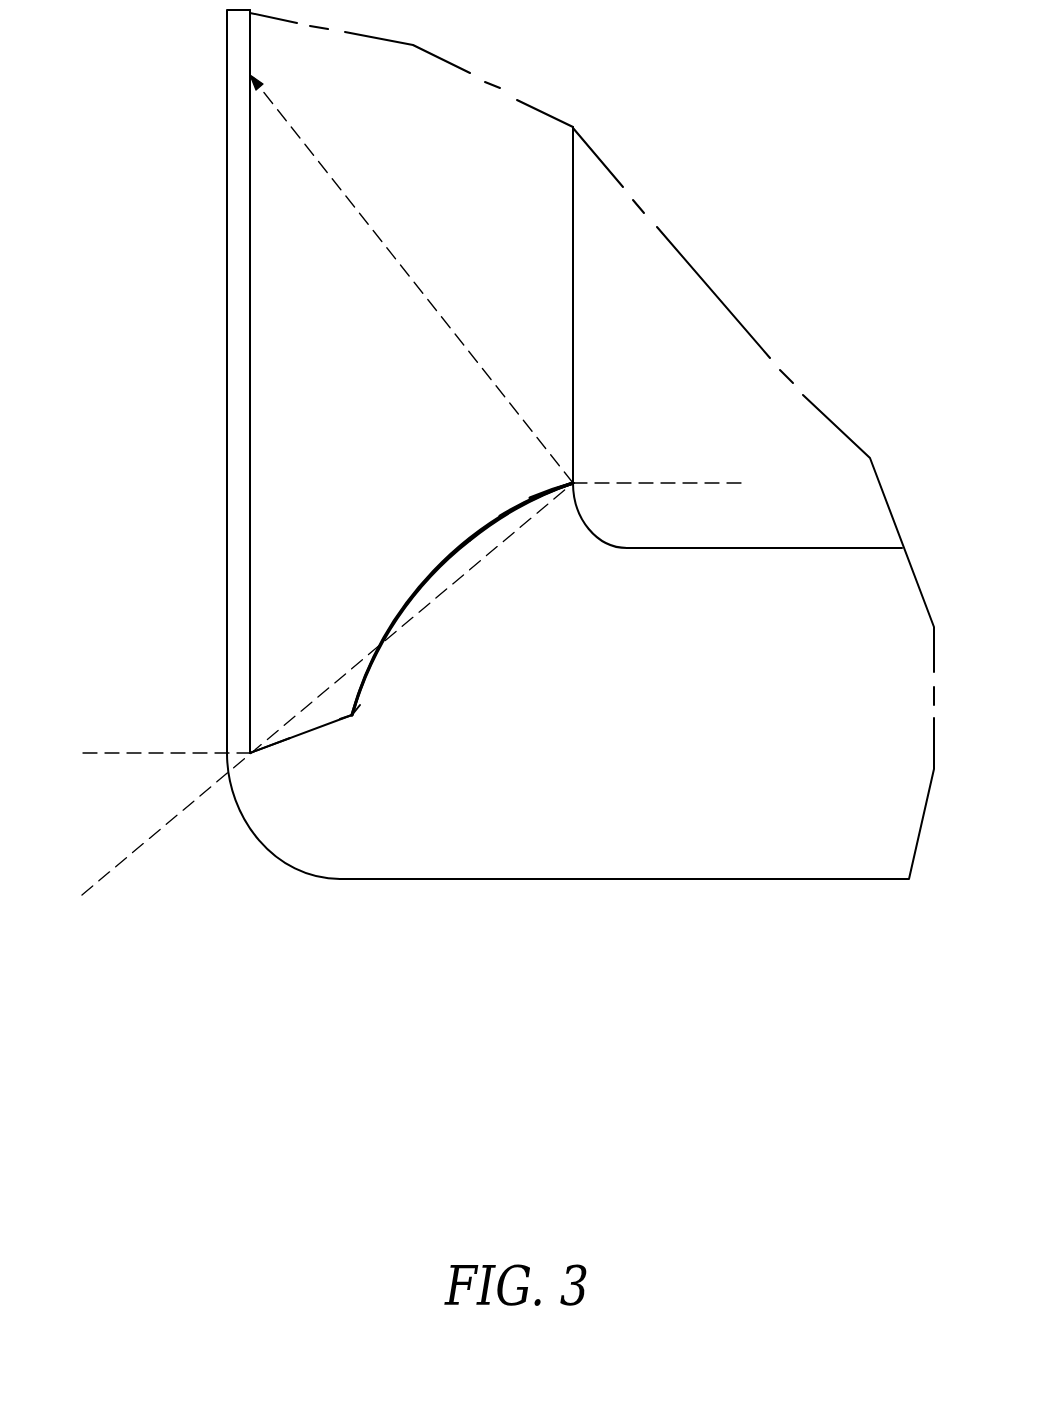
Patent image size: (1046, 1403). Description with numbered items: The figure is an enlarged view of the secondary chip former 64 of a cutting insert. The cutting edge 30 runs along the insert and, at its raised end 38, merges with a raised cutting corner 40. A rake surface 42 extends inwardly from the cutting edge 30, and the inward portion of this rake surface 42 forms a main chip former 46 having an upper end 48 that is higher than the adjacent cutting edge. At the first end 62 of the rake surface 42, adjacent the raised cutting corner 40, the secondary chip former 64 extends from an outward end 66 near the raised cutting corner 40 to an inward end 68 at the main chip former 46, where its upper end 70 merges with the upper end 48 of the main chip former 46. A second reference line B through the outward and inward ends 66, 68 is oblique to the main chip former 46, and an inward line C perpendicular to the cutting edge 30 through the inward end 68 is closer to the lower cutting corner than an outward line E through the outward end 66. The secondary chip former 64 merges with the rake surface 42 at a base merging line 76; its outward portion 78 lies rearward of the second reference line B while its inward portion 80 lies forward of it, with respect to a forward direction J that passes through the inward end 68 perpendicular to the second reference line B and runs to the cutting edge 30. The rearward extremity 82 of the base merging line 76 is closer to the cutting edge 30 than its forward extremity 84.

The cutting edge 30 is at (227, 240).
The raised end 38 is at (224, 750).
The raised cutting corner 40 is at (278, 855).
The rake surface 42 is at (268, 338).
The main chip former 46 is at (573, 185).
The upper end 48 is at (573, 268).
The first end 62 is at (287, 603).
The secondary chip former 64 is at (410, 597).
The outward end 66 is at (250, 752).
The inward end 68 is at (571, 475).
The upper end 70 is at (547, 500).
The base merging line 76 is at (492, 530).
The outward portion 78 is at (300, 735).
The inward portion 80 is at (523, 502).
The rearward extremity 82 is at (352, 715).
The forward extremity 84 is at (450, 530).
The forward direction J is at (335, 180).
The inward line C is at (670, 483).
The outward line E is at (120, 757).
The second reference line B is at (122, 860).